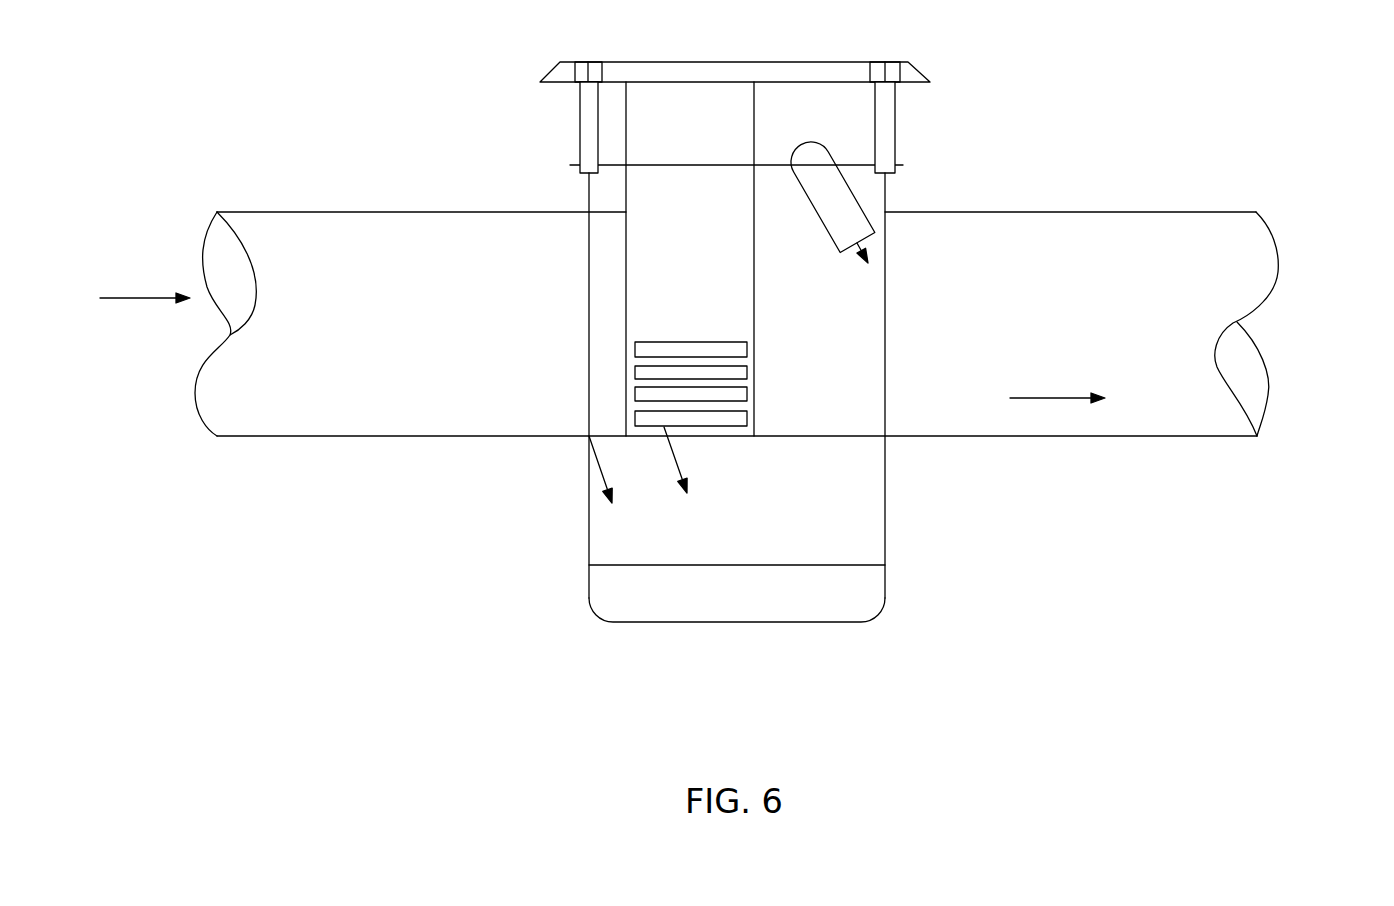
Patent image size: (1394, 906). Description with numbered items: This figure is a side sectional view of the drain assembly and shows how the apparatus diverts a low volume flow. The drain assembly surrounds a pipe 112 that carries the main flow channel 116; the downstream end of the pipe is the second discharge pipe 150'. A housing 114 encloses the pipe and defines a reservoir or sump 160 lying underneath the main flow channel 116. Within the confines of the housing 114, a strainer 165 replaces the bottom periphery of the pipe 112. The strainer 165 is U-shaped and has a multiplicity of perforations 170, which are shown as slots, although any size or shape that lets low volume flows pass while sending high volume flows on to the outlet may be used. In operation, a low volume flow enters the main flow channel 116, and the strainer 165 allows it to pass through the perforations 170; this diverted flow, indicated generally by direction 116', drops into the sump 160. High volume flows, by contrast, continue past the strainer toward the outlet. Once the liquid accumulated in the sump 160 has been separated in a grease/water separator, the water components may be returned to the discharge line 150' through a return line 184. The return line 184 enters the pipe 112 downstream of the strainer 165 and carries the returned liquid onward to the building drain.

The pipe 112 is at (220, 212).
The second discharge pipe 150' is at (1135, 309).
The housing 114 is at (858, 508).
The sump 160 is at (622, 593).
The perforations 170 is at (632, 352).
The return line 184 is at (838, 202).
The strainer 165 is at (727, 436).
The main flow channel 116 is at (602, 388).
The direction of low volume flow 116' is at (537, 495).